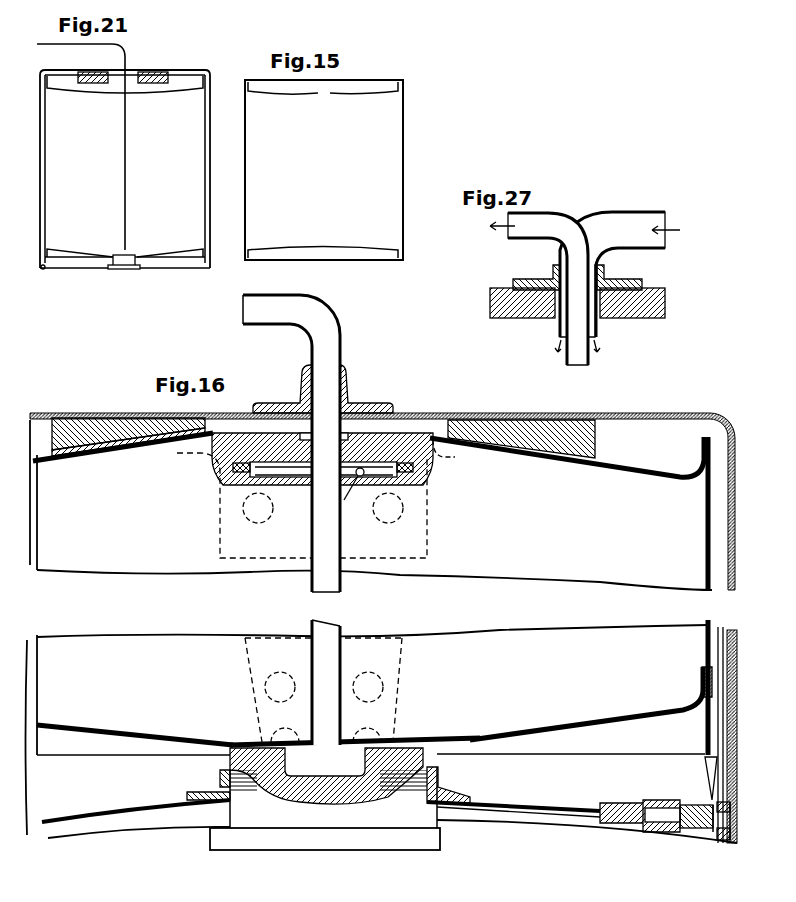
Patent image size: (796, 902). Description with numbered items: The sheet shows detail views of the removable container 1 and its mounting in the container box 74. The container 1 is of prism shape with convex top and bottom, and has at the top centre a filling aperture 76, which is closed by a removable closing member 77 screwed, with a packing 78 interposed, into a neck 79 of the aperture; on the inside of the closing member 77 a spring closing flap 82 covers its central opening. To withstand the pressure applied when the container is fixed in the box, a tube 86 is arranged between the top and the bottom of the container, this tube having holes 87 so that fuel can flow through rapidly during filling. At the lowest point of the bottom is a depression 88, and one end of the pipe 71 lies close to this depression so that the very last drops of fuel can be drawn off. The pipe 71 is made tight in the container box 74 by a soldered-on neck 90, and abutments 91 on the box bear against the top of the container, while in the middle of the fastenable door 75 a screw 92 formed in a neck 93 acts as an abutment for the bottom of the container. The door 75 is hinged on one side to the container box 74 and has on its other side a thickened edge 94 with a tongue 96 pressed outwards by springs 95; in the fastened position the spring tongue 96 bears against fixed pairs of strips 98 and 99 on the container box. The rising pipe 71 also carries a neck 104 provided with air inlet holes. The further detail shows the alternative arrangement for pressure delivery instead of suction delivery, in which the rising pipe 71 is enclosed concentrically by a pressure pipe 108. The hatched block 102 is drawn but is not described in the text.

In FIG. 21, the removable container 1 is at (195, 90).
In FIG. 15, the removable container 1 is at (400, 176).
In FIG. 16, the removable container 1 is at (644, 474).
In FIG. 21, the pipe 71 is at (126, 152).
In FIG. 27, the pipe 71 is at (528, 228).
In FIG. 16, the pipe 71 is at (275, 308).
In FIG. 21, the container box 74 is at (40, 142).
In FIG. 16, the container box 74 is at (660, 413).
In FIG. 16, the fastenable door 75 is at (546, 813).
In FIG. 15, the filling aperture 76 is at (324, 86).
In FIG. 27, the closing member 77 is at (518, 318).
In FIG. 16, the closing member 77 is at (275, 447).
In FIG. 16, the packing 78 is at (323, 469).
In FIG. 16, the neck 79 is at (436, 458).
In FIG. 16, the spring closing flap 82 is at (344, 500).
In FIG. 16, the tube 86 is at (220, 540).
In FIG. 16, the holes 87 is at (262, 521).
In FIG. 16, the depression 88 is at (322, 750).
In FIG. 16, the soldered-on neck 90 is at (345, 386).
In FIG. 21, the abutments 91 is at (163, 72).
In FIG. 16, the abutments 91 is at (73, 422).
In FIG. 21, the screw 92 is at (128, 264).
In FIG. 16, the screw 92 is at (318, 792).
In FIG. 16, the neck 93 is at (440, 776).
In FIG. 16, the thickened edge 94 is at (626, 803).
In FIG. 16, the springs 95 is at (663, 816).
In FIG. 16, the tongue 96 is at (695, 810).
In FIG. 16, the strips 98 is at (723, 831).
In FIG. 16, the strips 99 is at (719, 735).
In FIG. 16, the insulating block 102 is at (596, 423).
In FIG. 27, the neck 104 is at (603, 272).
In FIG. 27, the pressure pipe 108 is at (634, 224).